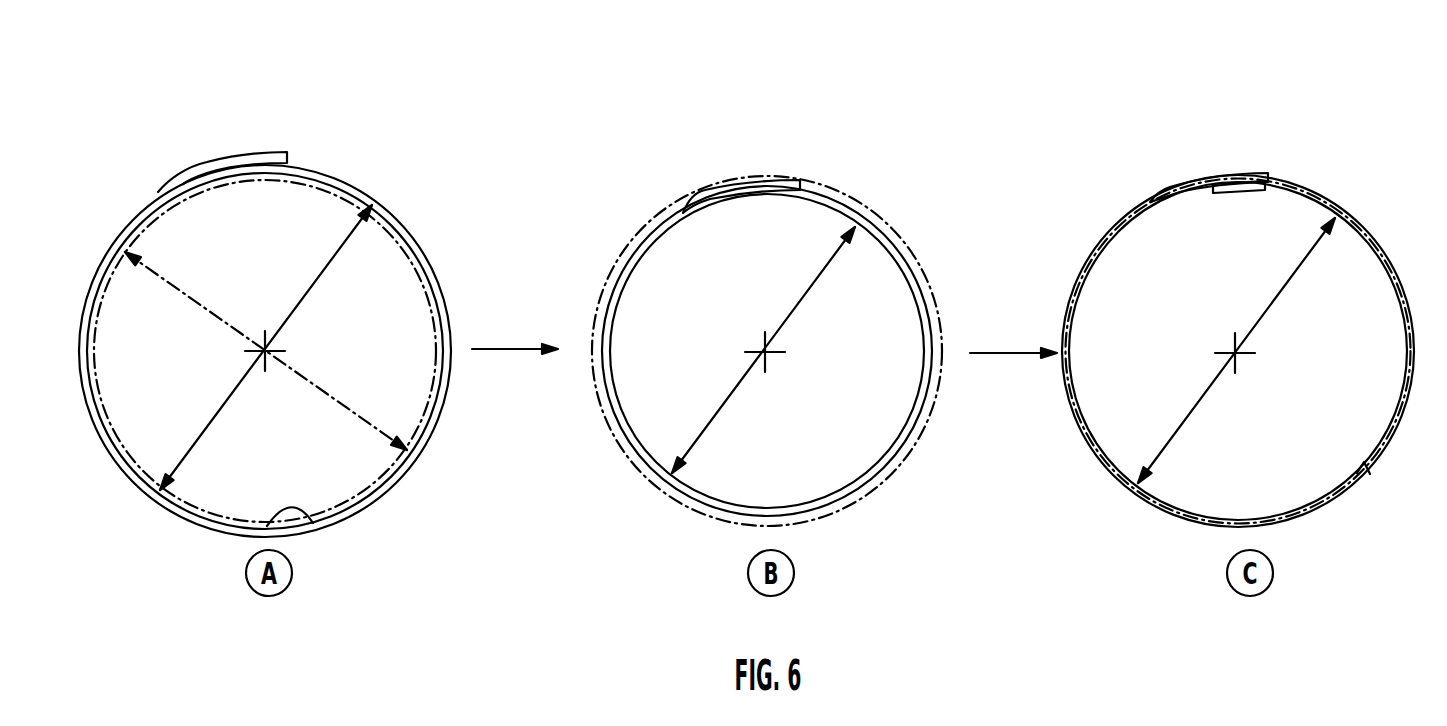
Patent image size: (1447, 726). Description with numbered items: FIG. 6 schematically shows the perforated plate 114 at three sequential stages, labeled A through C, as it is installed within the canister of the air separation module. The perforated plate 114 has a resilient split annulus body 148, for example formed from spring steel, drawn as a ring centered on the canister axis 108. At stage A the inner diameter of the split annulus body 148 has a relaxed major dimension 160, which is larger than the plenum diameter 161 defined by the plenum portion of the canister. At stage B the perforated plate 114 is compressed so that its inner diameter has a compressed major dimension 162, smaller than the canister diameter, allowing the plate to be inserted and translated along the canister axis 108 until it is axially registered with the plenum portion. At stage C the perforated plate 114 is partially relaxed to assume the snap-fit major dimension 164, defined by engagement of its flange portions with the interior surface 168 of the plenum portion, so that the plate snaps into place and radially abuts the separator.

The canister axis 108 is at (268, 349).
The perforated plate 114 is at (173, 533).
The split annulus body 148 is at (158, 190).
The relaxed major dimension 160 is at (213, 418).
The plenum diameter 161 is at (206, 306).
The compressed major dimension 162 is at (713, 415).
The snap-fit major dimension 164 is at (1187, 415).
The interior surface 168 is at (313, 523).